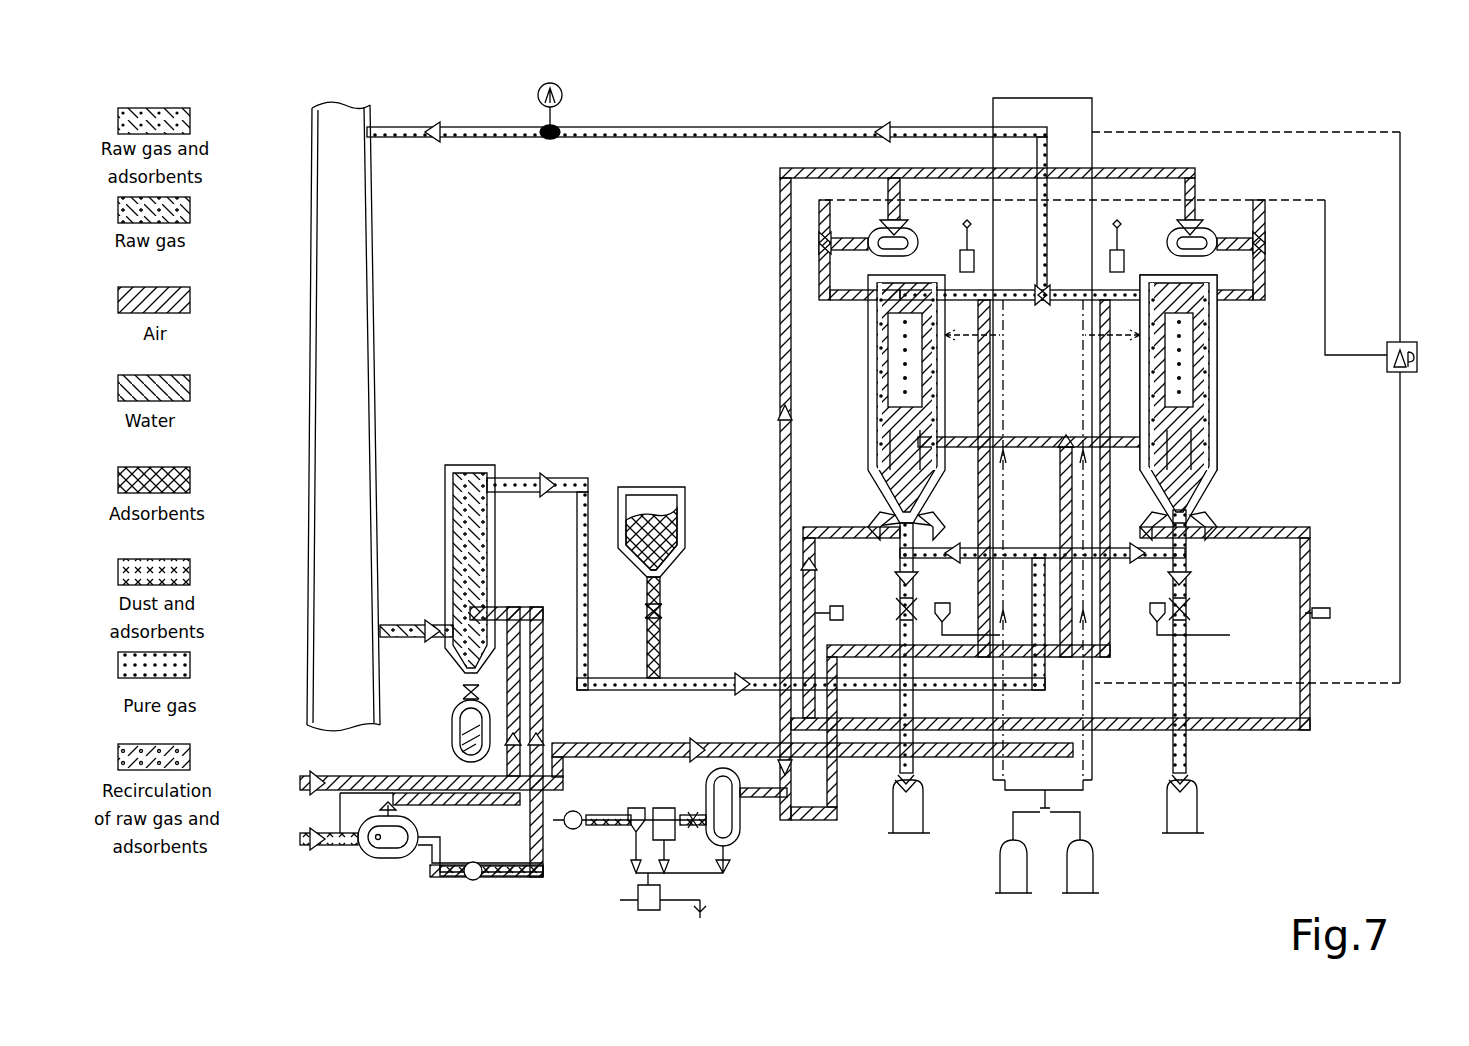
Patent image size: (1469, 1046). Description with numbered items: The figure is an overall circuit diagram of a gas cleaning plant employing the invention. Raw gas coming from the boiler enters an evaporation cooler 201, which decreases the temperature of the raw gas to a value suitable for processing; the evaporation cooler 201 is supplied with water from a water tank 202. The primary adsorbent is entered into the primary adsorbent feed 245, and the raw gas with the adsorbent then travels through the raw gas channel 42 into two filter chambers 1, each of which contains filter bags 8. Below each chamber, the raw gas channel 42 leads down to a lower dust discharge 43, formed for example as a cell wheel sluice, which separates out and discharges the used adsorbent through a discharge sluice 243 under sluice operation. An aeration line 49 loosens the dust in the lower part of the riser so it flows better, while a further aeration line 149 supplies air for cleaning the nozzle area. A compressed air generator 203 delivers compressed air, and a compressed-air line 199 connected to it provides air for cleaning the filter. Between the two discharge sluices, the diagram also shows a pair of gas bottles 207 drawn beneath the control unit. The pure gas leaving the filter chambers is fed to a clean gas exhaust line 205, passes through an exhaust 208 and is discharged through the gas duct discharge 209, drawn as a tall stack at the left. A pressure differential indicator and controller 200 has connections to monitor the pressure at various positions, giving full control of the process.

The filter chambers 1 is at (868, 345).
The filter bags 8 is at (882, 398).
The raw gas channel 42 is at (922, 556).
The lower dust discharge 43 is at (900, 610).
The aeration line 49 is at (877, 525).
The aeration line 149 is at (1310, 720).
The compressed-air line 199 is at (790, 198).
The pressure differential indicator and controller 200 is at (1410, 372).
The evaporation cooler 201 is at (455, 470).
The water tank 202 is at (386, 848).
The compressed air generator 203 is at (745, 857).
The clean gas exhaust line 205 is at (1043, 143).
The gas bottles 207 is at (1104, 860).
The exhaust 208 is at (453, 140).
The gas duct discharge 209 is at (352, 352).
The discharge sluice 243 is at (920, 780).
The primary adsorbent feed 245 is at (645, 497).